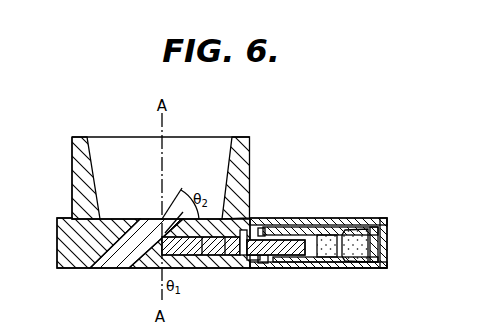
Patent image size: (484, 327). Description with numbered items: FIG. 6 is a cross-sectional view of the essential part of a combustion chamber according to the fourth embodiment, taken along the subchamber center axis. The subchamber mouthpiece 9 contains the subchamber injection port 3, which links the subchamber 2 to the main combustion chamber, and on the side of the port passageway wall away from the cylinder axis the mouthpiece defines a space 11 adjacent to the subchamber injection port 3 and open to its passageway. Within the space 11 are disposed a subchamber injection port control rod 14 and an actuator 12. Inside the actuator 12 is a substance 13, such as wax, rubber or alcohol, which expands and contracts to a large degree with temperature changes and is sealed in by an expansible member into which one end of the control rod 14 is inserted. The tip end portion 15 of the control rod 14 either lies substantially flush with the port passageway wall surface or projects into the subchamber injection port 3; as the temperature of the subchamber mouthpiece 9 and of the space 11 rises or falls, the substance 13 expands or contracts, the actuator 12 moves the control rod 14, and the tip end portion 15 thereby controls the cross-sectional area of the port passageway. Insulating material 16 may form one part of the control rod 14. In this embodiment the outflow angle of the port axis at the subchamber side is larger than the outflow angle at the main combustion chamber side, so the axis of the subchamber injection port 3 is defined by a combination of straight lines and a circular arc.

The cup cavity 2 is at (221, 150).
The subchamber mouthpiece 9 is at (246, 176).
The subchamber injection port 3 is at (107, 266).
The tip end portion 15 is at (153, 268).
The subchamber injection port control rod 14 is at (217, 268).
The insulating material 16 is at (236, 269).
The actuator 12 is at (286, 268).
The space 11 is at (315, 269).
The substance 13 is at (352, 260).